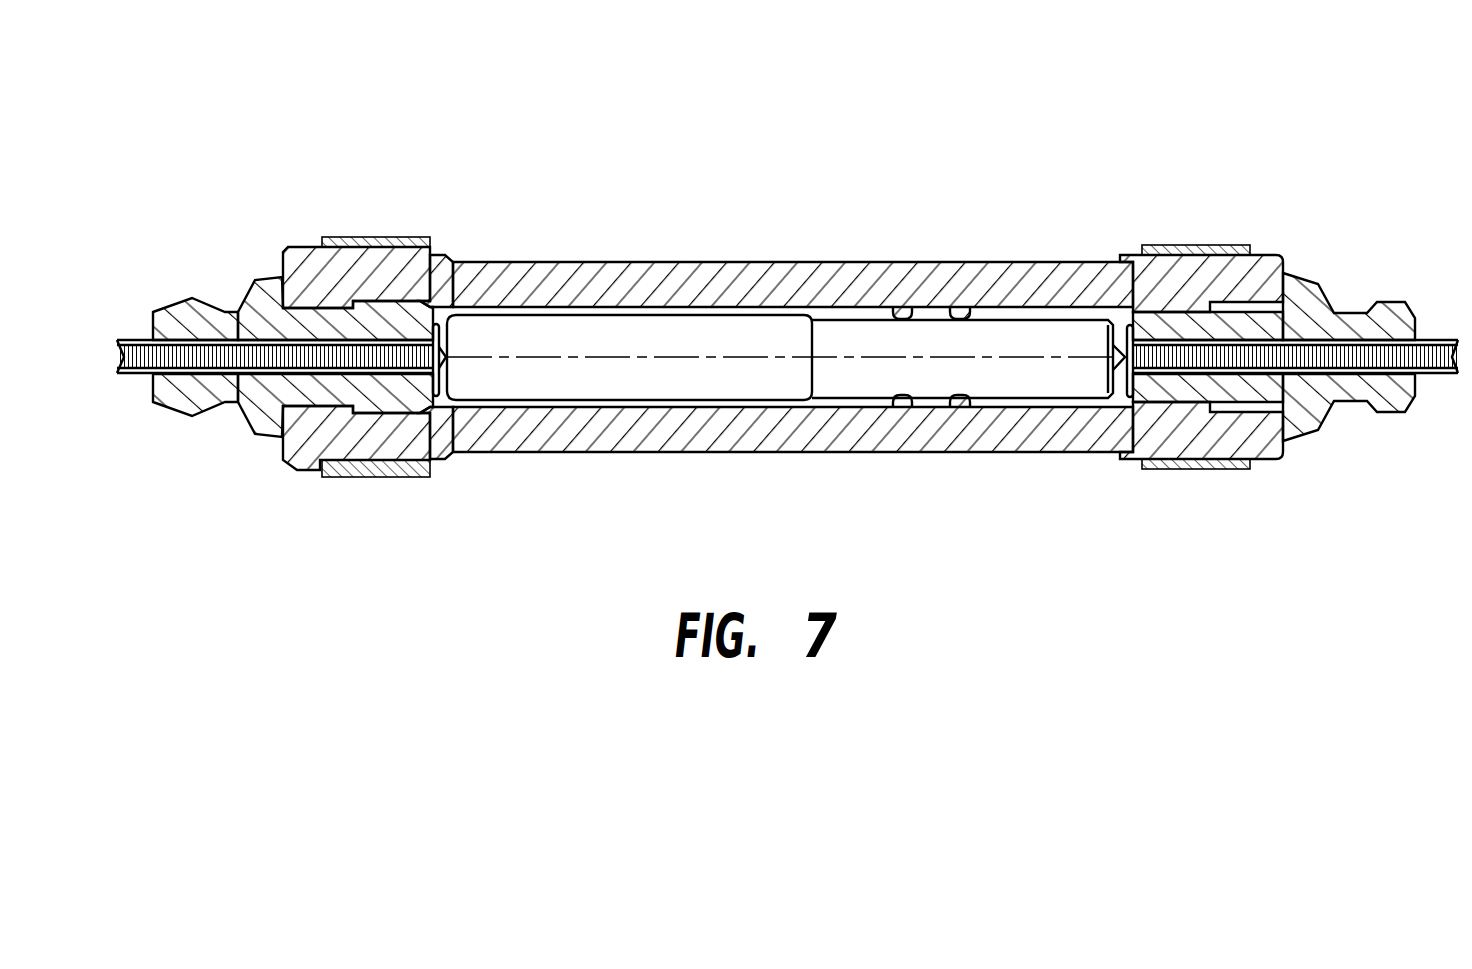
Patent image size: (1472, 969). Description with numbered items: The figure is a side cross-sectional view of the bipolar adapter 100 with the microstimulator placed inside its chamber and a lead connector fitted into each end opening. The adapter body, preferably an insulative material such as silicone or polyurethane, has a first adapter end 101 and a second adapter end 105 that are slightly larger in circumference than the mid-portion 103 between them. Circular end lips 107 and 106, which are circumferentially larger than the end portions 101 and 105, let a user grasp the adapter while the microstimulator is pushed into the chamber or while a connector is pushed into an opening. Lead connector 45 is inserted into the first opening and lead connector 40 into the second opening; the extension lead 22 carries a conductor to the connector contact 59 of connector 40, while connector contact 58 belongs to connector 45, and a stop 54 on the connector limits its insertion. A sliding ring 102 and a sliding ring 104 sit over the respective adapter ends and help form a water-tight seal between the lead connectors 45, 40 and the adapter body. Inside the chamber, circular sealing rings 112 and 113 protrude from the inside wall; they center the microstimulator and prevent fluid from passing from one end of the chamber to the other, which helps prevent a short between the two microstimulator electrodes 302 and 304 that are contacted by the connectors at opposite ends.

The bipolar adapter 100 is at (682, 207).
The extension lead 22 is at (1433, 340).
The lead connector 45 is at (227, 446).
The lead connector 40 is at (1347, 447).
The stop 54 is at (258, 250).
The connector contact 58 is at (437, 324).
The connector contact 59 is at (1127, 398).
The first adapter end 101 is at (440, 248).
The sliding ring 102 is at (372, 237).
The mid-portion 103 is at (738, 455).
The sliding ring 104 is at (1197, 245).
The second adapter end 105 is at (1135, 255).
The end lip 106 is at (1267, 255).
The end lip 107 is at (310, 243).
The sealing ring 112 is at (908, 318).
The sealing ring 113 is at (964, 318).
The microstimulator electrode 302 is at (458, 378).
The microstimulator electrode 304 is at (1113, 377).